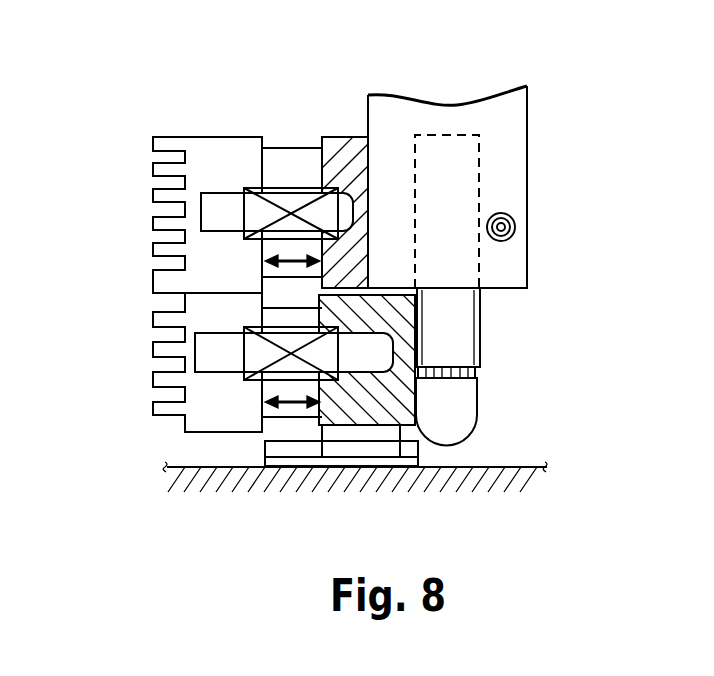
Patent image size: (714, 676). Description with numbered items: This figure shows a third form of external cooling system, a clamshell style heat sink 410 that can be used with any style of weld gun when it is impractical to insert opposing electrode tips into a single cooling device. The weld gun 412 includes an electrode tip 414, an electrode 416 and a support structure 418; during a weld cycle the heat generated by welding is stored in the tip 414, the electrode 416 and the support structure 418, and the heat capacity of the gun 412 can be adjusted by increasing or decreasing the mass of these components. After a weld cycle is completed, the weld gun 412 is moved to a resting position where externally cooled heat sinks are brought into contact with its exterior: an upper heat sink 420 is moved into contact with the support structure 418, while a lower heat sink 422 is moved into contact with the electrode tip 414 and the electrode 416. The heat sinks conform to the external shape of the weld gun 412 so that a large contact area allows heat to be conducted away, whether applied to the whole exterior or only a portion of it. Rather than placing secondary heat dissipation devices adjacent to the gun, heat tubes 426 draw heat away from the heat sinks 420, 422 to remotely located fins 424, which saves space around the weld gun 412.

The clamshell style heat sink 410 is at (175, 101).
The weld gun 412 is at (533, 125).
The electrode tip 414 is at (473, 412).
The electrode 416 is at (470, 337).
The support structure 418 is at (517, 229).
The upper heat sink 420 is at (341, 150).
The lower heat sink 422 is at (338, 403).
The fins 424 is at (153, 226).
The heat tubes 426 is at (287, 198).